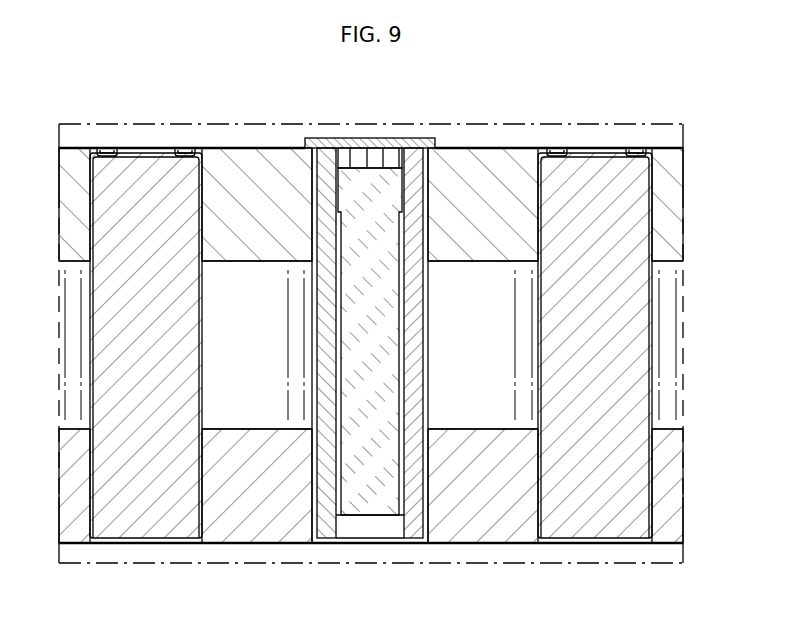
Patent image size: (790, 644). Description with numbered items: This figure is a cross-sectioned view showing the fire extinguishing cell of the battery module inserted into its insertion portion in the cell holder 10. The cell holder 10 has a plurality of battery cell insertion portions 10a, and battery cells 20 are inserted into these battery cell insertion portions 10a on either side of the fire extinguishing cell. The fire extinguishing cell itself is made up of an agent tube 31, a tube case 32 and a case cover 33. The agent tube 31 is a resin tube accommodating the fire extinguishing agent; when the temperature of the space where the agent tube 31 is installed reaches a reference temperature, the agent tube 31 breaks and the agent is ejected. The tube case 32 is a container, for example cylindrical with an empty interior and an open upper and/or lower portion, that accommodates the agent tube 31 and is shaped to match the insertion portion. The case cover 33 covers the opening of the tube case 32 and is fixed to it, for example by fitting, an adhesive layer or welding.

The cell holder 10 is at (235, 146).
The battery cell insertion portion 10a is at (119, 147).
The battery cell 20 is at (160, 147).
The agent tube 31 is at (370, 498).
The tube case 32 is at (415, 528).
The case cover 33 is at (375, 138).